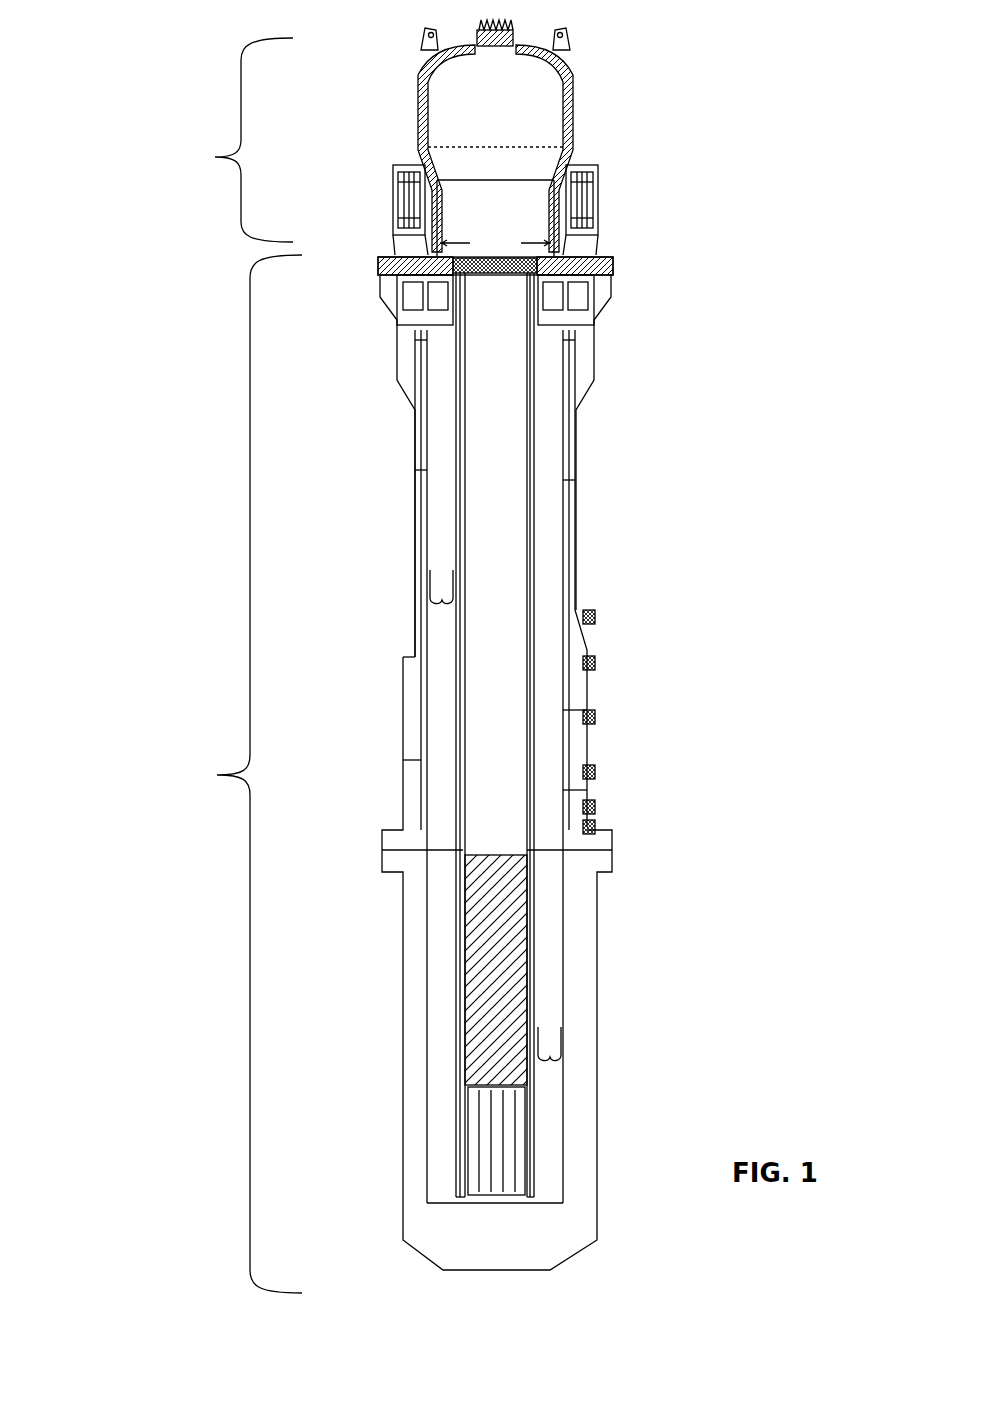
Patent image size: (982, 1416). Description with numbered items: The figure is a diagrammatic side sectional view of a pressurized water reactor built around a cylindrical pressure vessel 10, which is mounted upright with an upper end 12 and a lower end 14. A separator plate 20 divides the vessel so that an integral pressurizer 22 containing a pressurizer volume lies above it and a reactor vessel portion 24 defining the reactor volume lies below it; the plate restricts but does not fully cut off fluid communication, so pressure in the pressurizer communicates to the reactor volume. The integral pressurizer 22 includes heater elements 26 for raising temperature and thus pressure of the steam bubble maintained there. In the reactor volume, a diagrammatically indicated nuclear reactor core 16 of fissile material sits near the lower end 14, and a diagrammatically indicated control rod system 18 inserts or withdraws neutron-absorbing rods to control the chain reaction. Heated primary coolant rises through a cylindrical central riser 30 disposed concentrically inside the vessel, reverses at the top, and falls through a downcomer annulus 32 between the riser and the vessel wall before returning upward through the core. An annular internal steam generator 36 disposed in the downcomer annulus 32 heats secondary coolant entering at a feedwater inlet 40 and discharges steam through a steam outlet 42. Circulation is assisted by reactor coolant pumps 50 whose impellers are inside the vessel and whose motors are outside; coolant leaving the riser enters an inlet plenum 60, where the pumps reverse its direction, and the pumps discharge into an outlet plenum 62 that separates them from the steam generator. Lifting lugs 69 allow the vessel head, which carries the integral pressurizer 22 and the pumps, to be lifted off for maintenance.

The cylindrical pressure vessel 10 is at (215, 700).
The upper end 12 is at (590, 85).
The lower end 14 is at (322, 1196).
The nuclear reactor core 16 is at (497, 1126).
The control rod system 18 is at (507, 990).
The separator plate 20 is at (487, 253).
The integral pressurizer 22 is at (234, 140).
The reactor vessel portion 24 is at (241, 774).
The heater elements 26 is at (460, 240).
The cylindrical central riser 30 is at (462, 548).
The downcomer annulus 32 is at (442, 605).
The annular internal steam generator 36 is at (442, 475).
The feedwater inlet 40 is at (597, 770).
The steam outlet 42 is at (596, 718).
The reactor coolant pumps 50 is at (383, 178).
The inlet plenum 60 is at (446, 283).
The outlet plenum 62 is at (552, 312).
The lifting lugs 69 is at (426, 30).